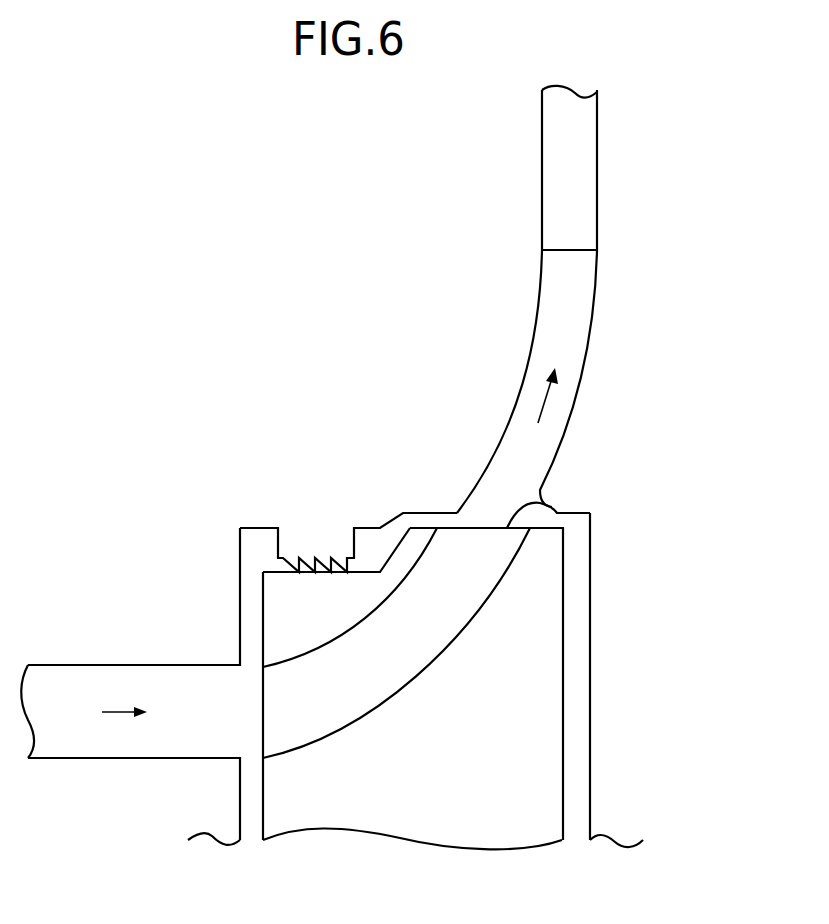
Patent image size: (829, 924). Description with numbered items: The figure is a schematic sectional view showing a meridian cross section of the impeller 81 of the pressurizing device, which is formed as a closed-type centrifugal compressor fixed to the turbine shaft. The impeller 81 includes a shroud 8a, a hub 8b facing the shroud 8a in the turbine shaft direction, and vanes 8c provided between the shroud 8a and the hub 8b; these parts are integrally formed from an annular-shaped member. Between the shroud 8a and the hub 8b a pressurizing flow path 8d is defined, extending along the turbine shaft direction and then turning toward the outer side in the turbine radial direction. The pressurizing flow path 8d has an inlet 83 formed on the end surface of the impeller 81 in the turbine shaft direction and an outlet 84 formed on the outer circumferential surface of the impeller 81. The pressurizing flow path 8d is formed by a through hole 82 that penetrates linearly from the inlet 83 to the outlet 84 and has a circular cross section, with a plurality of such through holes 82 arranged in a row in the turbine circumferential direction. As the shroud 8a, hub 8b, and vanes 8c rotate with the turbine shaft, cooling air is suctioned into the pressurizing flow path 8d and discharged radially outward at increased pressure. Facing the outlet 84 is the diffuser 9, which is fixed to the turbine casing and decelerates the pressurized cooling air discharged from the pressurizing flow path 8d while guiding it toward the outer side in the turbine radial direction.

The diffuser 9 is at (557, 193).
The impeller 81 is at (397, 542).
The outlet 84 is at (552, 507).
The pressurizing flow path 8d is at (460, 567).
The vane 8c is at (298, 702).
The through hole 82 is at (462, 636).
The shroud 8a is at (300, 623).
The inlet 83 is at (263, 728).
The hub 8b is at (352, 813).